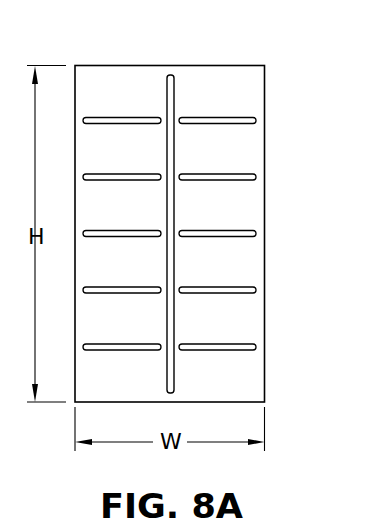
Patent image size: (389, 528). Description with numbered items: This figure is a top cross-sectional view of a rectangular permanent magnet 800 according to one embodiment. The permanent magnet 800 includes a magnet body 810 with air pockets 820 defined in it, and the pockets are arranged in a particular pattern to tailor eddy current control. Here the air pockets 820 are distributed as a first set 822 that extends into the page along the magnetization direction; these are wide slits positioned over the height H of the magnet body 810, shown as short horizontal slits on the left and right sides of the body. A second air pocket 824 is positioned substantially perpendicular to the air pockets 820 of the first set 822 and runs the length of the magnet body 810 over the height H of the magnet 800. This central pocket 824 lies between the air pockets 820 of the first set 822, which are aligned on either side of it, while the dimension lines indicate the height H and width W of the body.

The permanent magnet 800 is at (211, 208).
The magnet body 810 is at (253, 93).
The air pockets 820 is at (246, 172).
The first set 822 is at (257, 347).
The second air pocket 824 is at (174, 185).